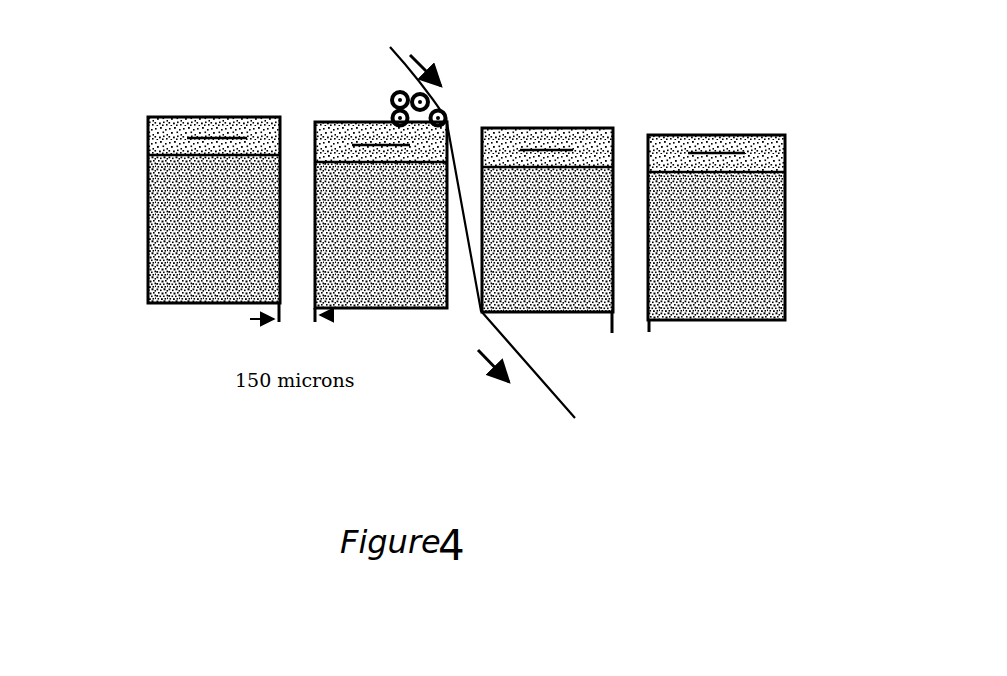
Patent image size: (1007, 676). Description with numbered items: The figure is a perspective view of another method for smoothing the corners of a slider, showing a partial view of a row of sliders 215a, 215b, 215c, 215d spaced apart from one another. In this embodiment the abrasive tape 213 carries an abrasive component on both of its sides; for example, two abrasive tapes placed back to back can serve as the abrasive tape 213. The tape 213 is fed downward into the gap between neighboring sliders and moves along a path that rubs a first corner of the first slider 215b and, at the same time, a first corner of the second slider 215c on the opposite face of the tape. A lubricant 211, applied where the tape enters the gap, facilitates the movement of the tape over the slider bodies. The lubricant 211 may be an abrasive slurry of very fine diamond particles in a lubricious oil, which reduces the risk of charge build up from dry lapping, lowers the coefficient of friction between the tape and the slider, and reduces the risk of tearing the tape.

The lubricant 211 is at (395, 110).
The abrasive tape 213 is at (570, 408).
The slider 215a is at (148, 232).
The first slider 215b is at (378, 310).
The second slider 215c is at (567, 313).
The slider 215d is at (773, 210).